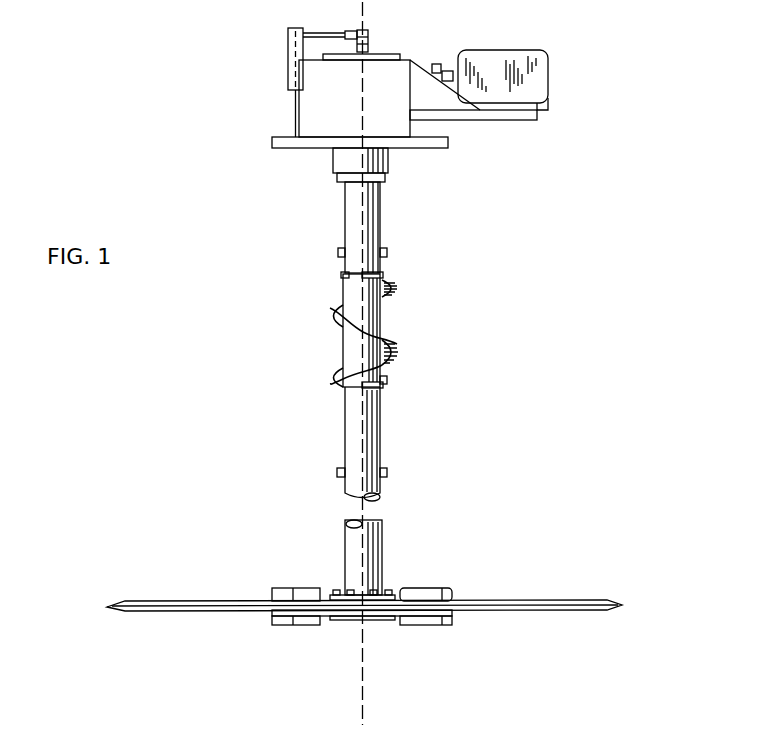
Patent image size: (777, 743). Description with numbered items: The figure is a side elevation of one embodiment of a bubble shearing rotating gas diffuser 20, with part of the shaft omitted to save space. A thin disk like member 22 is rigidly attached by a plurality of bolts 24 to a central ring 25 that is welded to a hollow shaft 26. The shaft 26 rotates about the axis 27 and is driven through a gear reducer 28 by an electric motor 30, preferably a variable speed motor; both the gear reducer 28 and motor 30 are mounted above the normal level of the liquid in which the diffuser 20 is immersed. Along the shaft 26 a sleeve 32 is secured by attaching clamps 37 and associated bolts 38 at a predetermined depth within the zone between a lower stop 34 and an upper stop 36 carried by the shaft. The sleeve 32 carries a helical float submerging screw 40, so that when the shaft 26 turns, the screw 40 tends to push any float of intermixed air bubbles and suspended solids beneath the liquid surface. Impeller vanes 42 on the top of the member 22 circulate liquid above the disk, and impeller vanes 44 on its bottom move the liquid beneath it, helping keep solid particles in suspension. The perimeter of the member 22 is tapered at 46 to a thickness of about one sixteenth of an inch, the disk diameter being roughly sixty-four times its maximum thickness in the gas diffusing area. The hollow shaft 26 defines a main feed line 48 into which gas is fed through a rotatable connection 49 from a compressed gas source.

The rotating gas diffuser 20 is at (462, 363).
The disk like member 22 is at (480, 594).
The bolts 24 is at (388, 592).
The central ring 25 is at (355, 592).
The hollow shaft 26 is at (350, 422).
The axis 27 is at (362, 105).
The gear reducer 28 is at (300, 114).
The electric motor 30 is at (547, 76).
The sleeve 32 is at (380, 316).
The lower stop 34 is at (340, 476).
The upper stop 36 is at (343, 251).
The attaching clamps 37 is at (369, 270).
The bolts 38 is at (385, 275).
The helical float submerging screw 40 is at (333, 320).
The impeller vanes 42 is at (300, 590).
The impeller vanes 44 is at (310, 625).
The tapered perimeter 46 is at (613, 600).
The main feed line 48 is at (378, 499).
The rotatable connection 49 is at (369, 48).